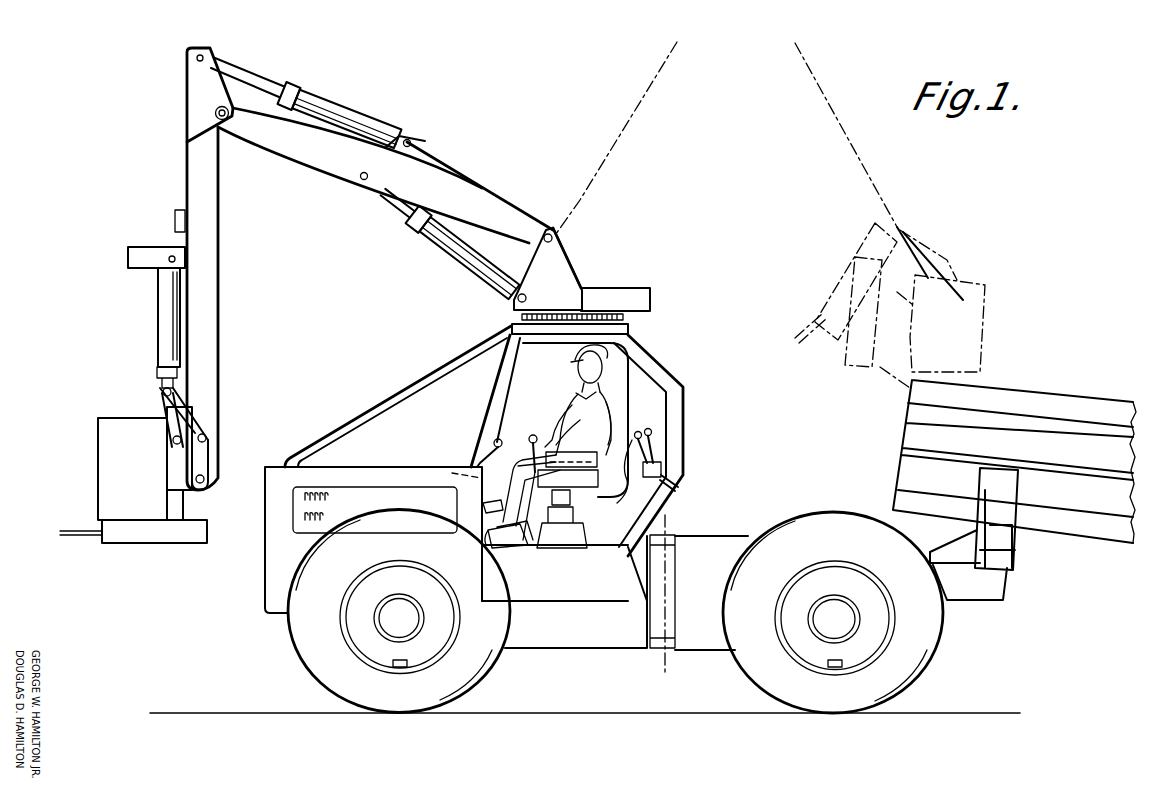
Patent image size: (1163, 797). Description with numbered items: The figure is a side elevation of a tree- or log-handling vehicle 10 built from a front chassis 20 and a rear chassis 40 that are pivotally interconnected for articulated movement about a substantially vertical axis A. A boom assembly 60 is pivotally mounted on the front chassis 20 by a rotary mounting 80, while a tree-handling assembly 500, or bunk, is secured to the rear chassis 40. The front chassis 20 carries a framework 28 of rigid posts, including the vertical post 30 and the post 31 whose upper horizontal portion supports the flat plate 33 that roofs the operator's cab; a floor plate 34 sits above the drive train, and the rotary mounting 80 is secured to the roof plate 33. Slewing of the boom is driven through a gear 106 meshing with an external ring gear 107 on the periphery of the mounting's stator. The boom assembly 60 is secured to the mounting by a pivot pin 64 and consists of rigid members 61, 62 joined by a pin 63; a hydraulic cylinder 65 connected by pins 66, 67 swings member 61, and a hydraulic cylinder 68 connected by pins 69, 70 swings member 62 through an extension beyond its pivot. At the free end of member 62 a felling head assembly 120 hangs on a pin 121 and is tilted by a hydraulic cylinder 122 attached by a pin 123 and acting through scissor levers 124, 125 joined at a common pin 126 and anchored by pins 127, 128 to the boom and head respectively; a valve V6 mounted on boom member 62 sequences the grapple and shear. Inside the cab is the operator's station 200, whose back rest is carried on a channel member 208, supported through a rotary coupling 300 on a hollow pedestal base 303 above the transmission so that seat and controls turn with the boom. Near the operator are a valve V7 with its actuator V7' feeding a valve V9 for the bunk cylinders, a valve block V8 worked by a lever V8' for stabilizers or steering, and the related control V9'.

The tree-handling vehicle 10 is at (728, 418).
The front chassis 20 is at (329, 466).
The framework 28 is at (668, 364).
The post 30 is at (502, 368).
The post 31 is at (681, 391).
The flat plate 33 is at (510, 325).
The floor plate 34 is at (602, 543).
The rear chassis 40 is at (741, 538).
The boom assembly 60 is at (485, 185).
The boom member 61 is at (318, 163).
The boom member 62 is at (207, 283).
The pin 63 is at (216, 113).
The pivot pin 64 is at (553, 236).
The hydraulic cylinder 65 is at (426, 228).
The pin 66 is at (527, 297).
The pin 67 is at (362, 180).
The hydraulic cylinder 68 is at (320, 102).
The pin 69 is at (409, 138).
The pin 70 is at (197, 60).
The rotary mounting 80 is at (595, 287).
The gear 106 is at (628, 325).
The external ring gear 107 is at (512, 305).
The felling head assembly 120 is at (97, 451).
The pin 121 is at (205, 478).
The hydraulic cylinder 122 is at (160, 302).
The pin 123 is at (169, 259).
The linkage member 124 is at (190, 422).
The linkage member 125 is at (160, 405).
The common pivot pin 126 is at (163, 390).
The pin 127 is at (207, 437).
The pin 128 is at (174, 442).
The operator's station 200 is at (533, 422).
The channel member 208 is at (624, 400).
The rotary coupling 300 is at (494, 508).
The hollow pedestal base 303 is at (557, 540).
The tree-handling assembly 500 is at (1002, 488).
The valve V6 is at (177, 209).
The valve V7 is at (702, 499).
The actuator V7' is at (632, 479).
The valve block assembly V8 is at (450, 462).
The lever V8' is at (461, 435).
The valve V9 is at (689, 468).
The valve lever V9' is at (698, 452).
The vertical axis A is at (662, 596).